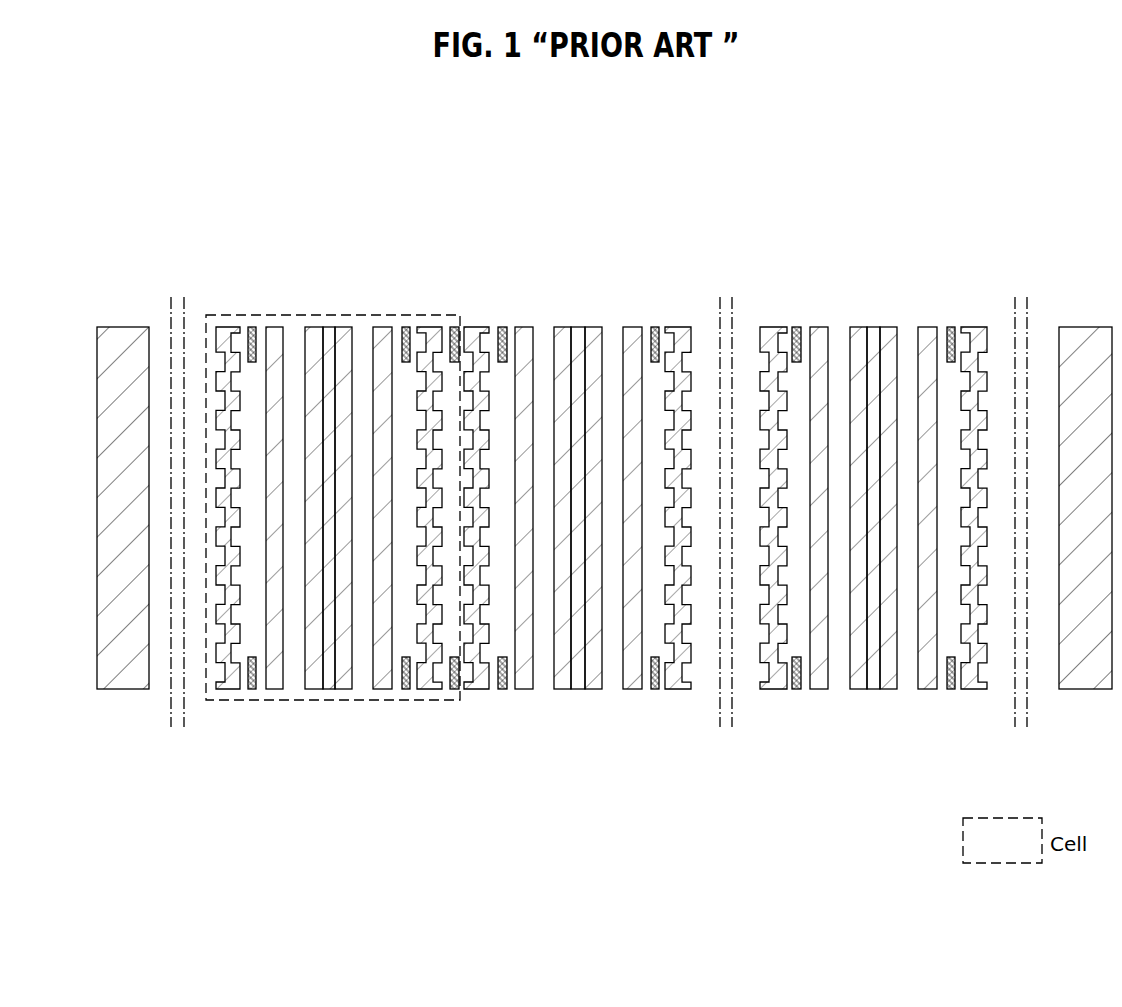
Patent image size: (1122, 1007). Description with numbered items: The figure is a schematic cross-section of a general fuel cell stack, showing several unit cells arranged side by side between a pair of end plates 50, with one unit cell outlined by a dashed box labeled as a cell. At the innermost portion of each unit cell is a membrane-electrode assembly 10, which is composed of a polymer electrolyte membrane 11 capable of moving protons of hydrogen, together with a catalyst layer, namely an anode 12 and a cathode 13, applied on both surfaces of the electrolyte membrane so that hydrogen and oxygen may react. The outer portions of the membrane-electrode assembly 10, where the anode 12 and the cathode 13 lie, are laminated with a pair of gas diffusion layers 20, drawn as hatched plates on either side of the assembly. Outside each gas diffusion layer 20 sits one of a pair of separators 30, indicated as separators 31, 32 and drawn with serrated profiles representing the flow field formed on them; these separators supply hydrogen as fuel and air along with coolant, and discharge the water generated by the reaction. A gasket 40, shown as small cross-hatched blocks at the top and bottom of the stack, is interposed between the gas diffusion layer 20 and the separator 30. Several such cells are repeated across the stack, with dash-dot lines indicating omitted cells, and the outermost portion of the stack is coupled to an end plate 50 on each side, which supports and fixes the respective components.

The membrane-electrode assembly 10 is at (583, 586).
The polymer electrolyte membrane 11 is at (329, 689).
The anode 12 is at (344, 689).
The cathode 13 is at (313, 689).
The gas diffusion layer 20 is at (275, 689).
The separator 30 is at (590, 591).
The separator 31 is at (225, 689).
The separator 32 is at (430, 689).
The gasket 40 is at (252, 327).
The end plate 50 is at (122, 672).